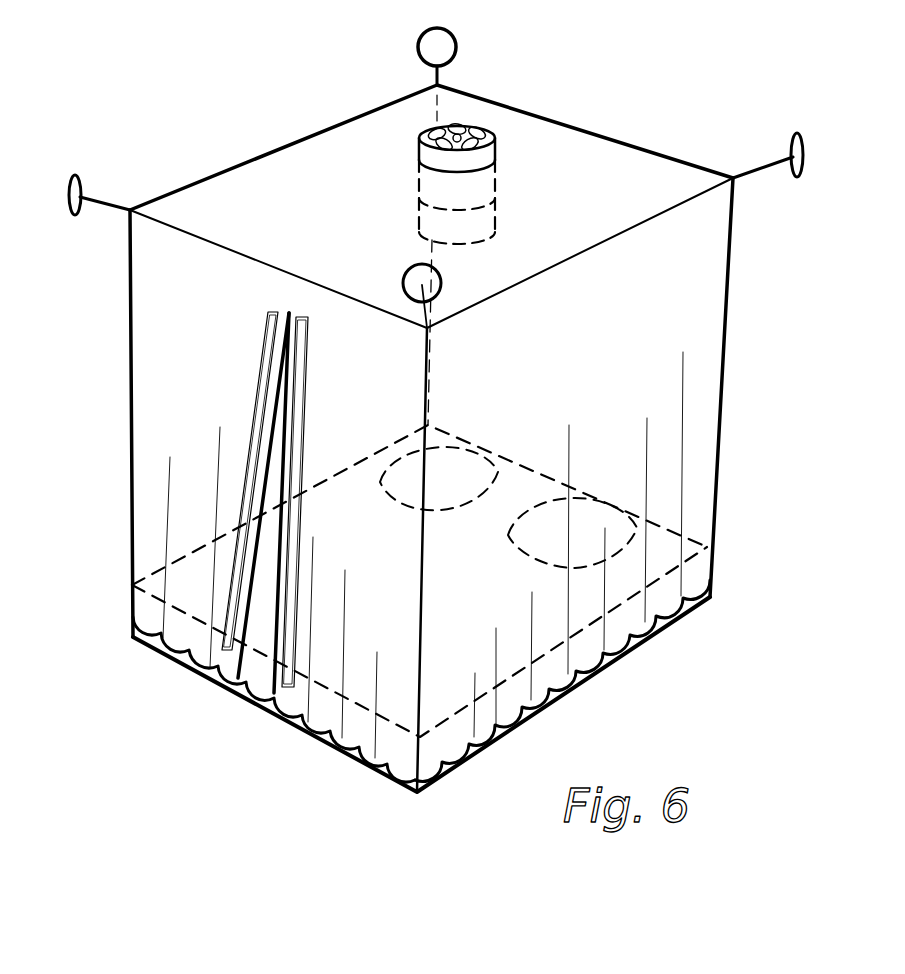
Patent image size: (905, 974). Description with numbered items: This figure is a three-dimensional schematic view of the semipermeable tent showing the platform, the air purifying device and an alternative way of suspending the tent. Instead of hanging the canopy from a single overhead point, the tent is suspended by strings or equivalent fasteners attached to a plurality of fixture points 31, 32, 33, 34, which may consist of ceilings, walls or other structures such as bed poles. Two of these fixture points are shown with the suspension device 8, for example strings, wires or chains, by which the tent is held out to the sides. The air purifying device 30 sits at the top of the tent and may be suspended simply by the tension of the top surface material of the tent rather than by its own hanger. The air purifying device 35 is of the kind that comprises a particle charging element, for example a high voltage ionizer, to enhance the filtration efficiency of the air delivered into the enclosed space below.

The suspension device 8 is at (134, 207).
The air purifying device 30 is at (408, 172).
The fixture point 31 is at (457, 48).
The fixture point 32 is at (82, 172).
The fixture point 33 is at (403, 282).
The fixture point 34 is at (797, 178).
The air purifying device 35 is at (590, 185).